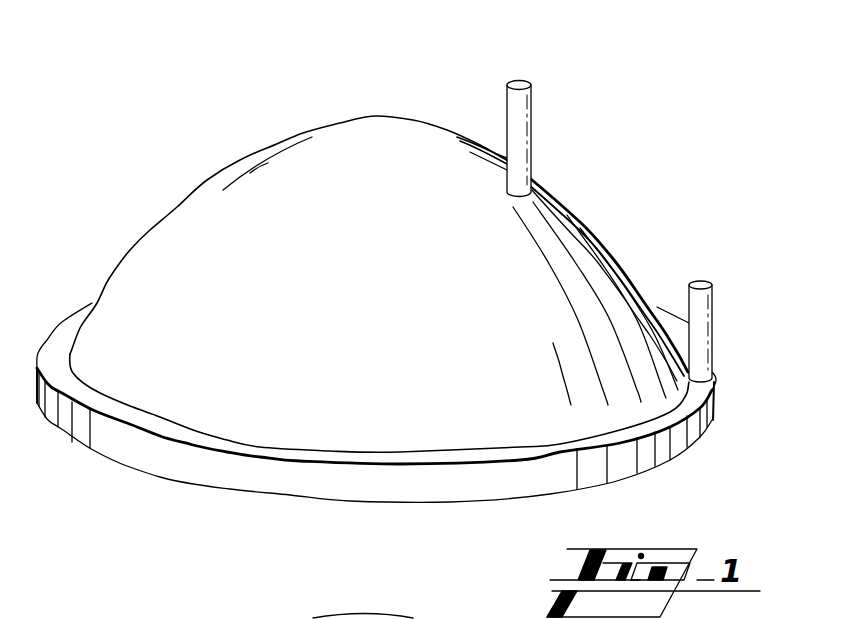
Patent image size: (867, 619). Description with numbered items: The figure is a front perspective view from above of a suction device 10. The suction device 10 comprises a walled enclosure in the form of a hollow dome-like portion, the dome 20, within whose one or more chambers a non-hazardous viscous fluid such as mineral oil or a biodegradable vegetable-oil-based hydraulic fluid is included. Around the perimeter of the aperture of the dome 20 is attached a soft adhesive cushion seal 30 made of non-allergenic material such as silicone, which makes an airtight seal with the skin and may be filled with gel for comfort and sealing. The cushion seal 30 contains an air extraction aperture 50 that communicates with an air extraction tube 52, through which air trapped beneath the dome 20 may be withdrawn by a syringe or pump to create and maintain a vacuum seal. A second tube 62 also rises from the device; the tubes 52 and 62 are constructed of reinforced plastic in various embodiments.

The suction device 10 is at (630, 134).
The dome 20 is at (253, 197).
The cushion seal 30 is at (647, 458).
The air extraction aperture 50 is at (358, 617).
The air extraction tube 52 is at (715, 303).
The tube 62 is at (533, 115).